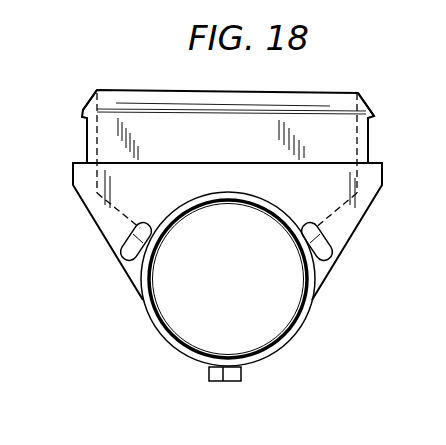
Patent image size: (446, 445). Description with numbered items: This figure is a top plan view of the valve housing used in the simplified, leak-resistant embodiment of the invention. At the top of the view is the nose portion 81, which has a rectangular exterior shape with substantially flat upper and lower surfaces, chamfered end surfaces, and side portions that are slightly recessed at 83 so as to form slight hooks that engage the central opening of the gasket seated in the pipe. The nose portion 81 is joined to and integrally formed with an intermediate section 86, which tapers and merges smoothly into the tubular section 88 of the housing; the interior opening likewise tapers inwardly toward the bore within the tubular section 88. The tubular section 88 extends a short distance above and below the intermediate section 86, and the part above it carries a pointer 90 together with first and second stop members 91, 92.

The nose portion 81 is at (263, 91).
The recessed side portions 83 is at (86, 146).
The intermediate section 86 is at (88, 215).
The tubular section 88 is at (287, 347).
The pointer 90 is at (224, 381).
The first stop member 91 is at (128, 263).
The second stop member 92 is at (321, 263).